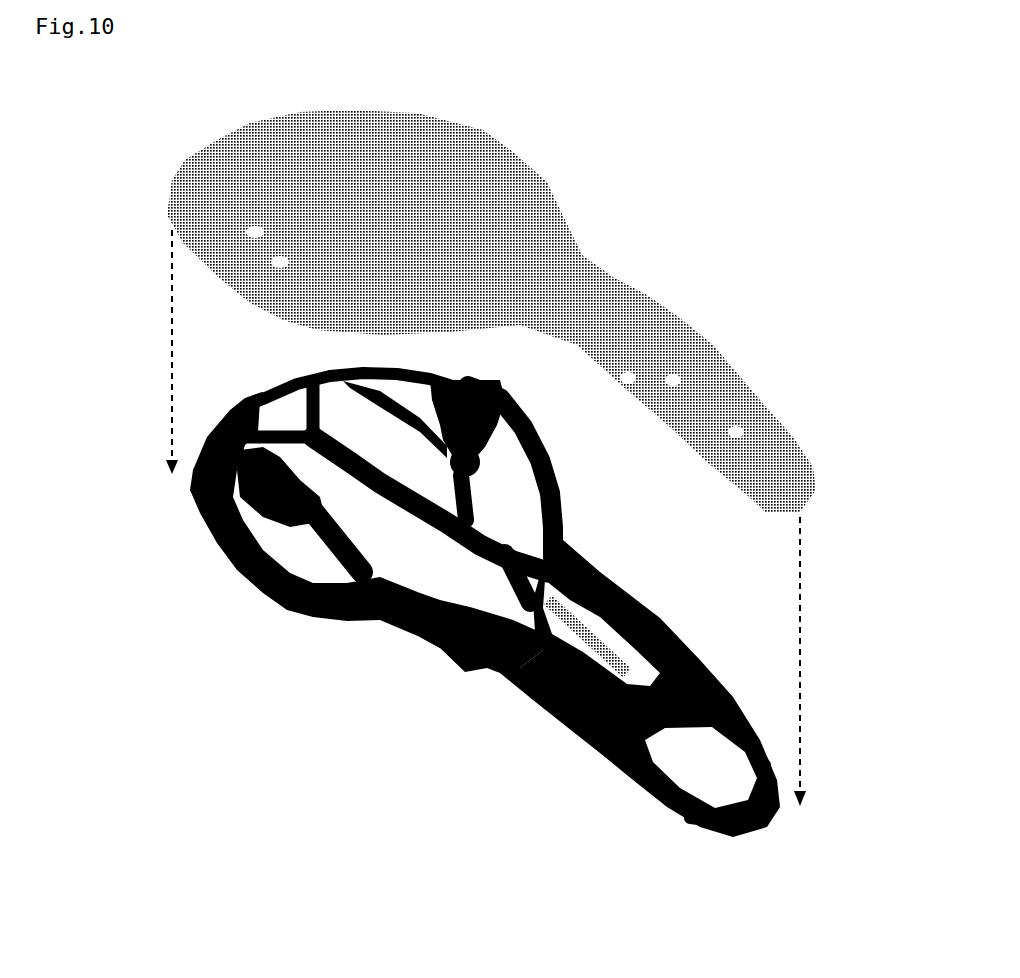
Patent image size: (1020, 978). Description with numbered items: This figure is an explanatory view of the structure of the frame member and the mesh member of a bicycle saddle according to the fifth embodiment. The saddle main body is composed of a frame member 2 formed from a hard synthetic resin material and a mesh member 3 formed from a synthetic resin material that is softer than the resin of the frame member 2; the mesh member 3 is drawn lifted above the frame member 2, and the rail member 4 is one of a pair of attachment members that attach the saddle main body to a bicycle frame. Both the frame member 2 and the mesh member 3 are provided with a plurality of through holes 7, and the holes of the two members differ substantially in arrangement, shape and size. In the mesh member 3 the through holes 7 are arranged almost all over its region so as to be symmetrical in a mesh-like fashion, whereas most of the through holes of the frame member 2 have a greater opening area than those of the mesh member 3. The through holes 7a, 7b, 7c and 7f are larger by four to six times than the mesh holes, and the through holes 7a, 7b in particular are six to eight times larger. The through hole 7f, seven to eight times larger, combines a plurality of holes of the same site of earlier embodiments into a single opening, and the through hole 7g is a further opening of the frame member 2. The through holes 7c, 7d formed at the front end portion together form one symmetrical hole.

The frame member 2 is at (660, 615).
The mesh member 3 is at (733, 280).
The rail member 4 is at (467, 672).
The through hole 7 is at (277, 262).
The through hole 7a is at (383, 524).
The through hole 7b is at (510, 483).
The through hole 7c is at (573, 650).
The through hole 7d is at (710, 758).
The through hole 7f is at (340, 405).
The through hole 7g is at (398, 392).